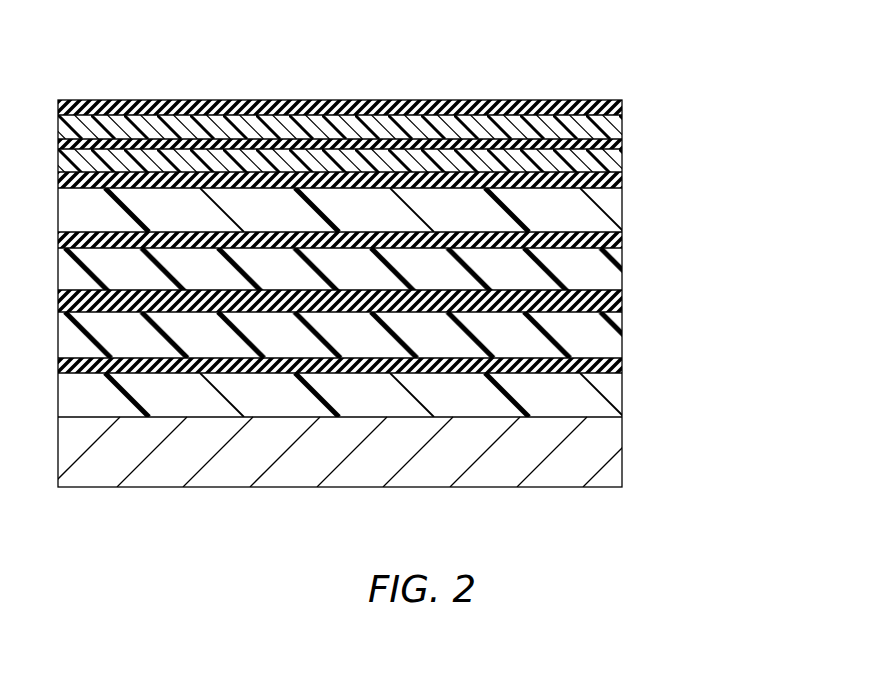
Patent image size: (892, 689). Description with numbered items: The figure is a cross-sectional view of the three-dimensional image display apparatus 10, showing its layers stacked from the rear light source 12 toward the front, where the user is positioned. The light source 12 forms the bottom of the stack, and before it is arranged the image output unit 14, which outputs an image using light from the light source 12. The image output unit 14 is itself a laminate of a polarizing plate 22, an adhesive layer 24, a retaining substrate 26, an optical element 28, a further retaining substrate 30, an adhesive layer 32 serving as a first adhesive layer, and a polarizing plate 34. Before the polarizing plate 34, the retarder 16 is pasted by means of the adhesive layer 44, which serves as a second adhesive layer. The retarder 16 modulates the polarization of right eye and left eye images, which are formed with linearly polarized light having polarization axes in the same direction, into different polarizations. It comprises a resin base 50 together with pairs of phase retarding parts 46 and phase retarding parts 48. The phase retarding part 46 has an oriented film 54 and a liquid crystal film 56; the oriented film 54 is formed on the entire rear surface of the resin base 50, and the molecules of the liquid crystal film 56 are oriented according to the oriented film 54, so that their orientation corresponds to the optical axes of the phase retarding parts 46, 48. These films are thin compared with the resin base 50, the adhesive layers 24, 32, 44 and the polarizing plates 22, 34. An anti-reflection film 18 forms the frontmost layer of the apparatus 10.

The three-dimensional image display apparatus 10 is at (443, 76).
The light source 12 is at (622, 457).
The image output unit 14 is at (686, 213).
The retarder 16 is at (764, 113).
The anti-reflection film 18 is at (622, 107).
The polarizing plate 22 is at (622, 393).
The adhesive layer 24 is at (622, 365).
The retaining substrate 26 is at (622, 330).
The optical element 28 is at (622, 300).
The retaining substrate 30 is at (622, 270).
The adhesive layer 32 is at (622, 240).
The polarizing plate 34 is at (622, 214).
The adhesive layer 44 is at (622, 182).
The phase retarding part 46 is at (681, 137).
The phase retarding part 48 is at (691, 173).
The resin base 50 is at (622, 128).
The oriented film 54 is at (622, 145).
The liquid crystal film 56 is at (622, 160).